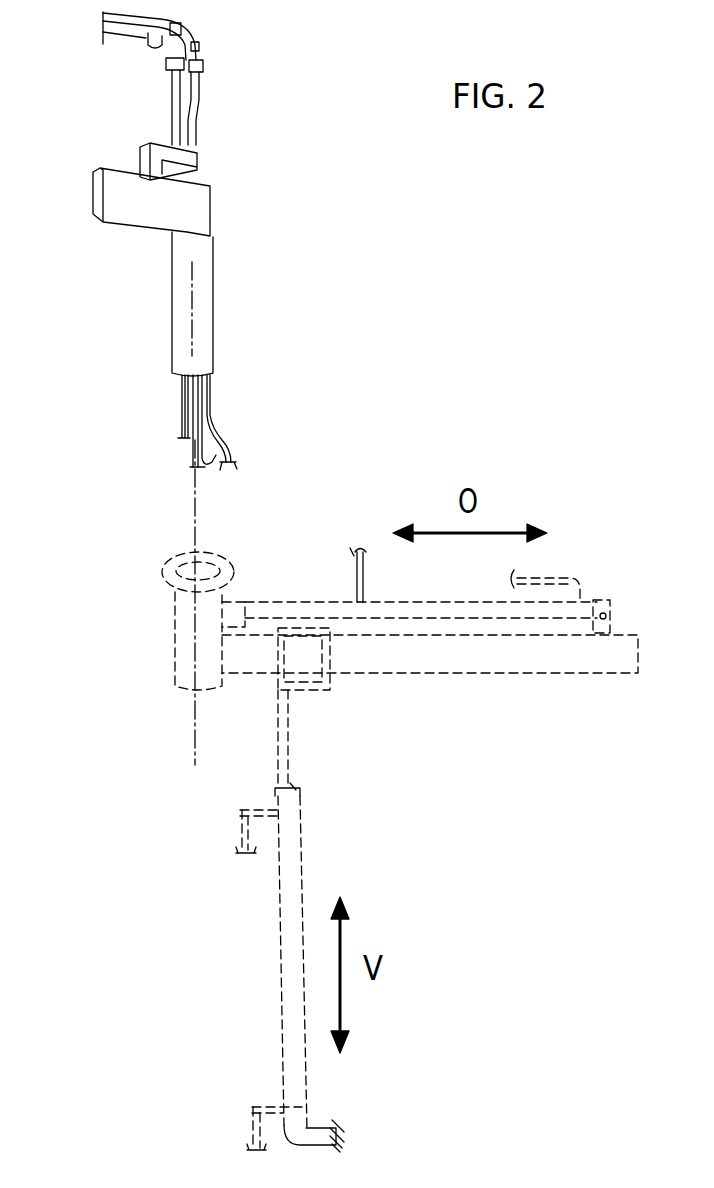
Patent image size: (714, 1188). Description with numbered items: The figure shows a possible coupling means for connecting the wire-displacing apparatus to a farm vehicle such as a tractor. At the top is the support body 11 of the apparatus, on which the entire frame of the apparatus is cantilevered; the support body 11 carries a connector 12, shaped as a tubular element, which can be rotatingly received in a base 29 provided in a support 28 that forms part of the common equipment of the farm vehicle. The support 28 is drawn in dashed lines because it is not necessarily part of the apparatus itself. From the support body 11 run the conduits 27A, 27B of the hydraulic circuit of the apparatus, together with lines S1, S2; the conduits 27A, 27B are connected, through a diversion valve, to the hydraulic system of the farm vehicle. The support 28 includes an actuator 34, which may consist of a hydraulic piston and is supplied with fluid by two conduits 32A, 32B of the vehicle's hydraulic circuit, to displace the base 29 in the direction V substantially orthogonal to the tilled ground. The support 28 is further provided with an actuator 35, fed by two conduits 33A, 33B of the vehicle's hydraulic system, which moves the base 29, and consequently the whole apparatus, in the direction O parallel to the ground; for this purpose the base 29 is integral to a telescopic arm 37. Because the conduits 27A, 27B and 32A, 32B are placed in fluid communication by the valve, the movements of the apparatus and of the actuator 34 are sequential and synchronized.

The support body 11 is at (117, 188).
The connector 12 is at (217, 268).
The conduit 27A is at (181, 418).
The conduit 27B is at (217, 470).
The sensor line S1 is at (289, 416).
The sensor line S2 is at (227, 429).
The support 28 is at (352, 836).
The base 29 is at (172, 622).
The conduit 33A is at (356, 565).
The conduit 33B is at (573, 575).
The actuator 35 is at (458, 612).
The telescopic arm 37 is at (253, 673).
The actuator 34 is at (288, 943).
The conduit 32A is at (252, 1118).
The conduit 32B is at (240, 835).